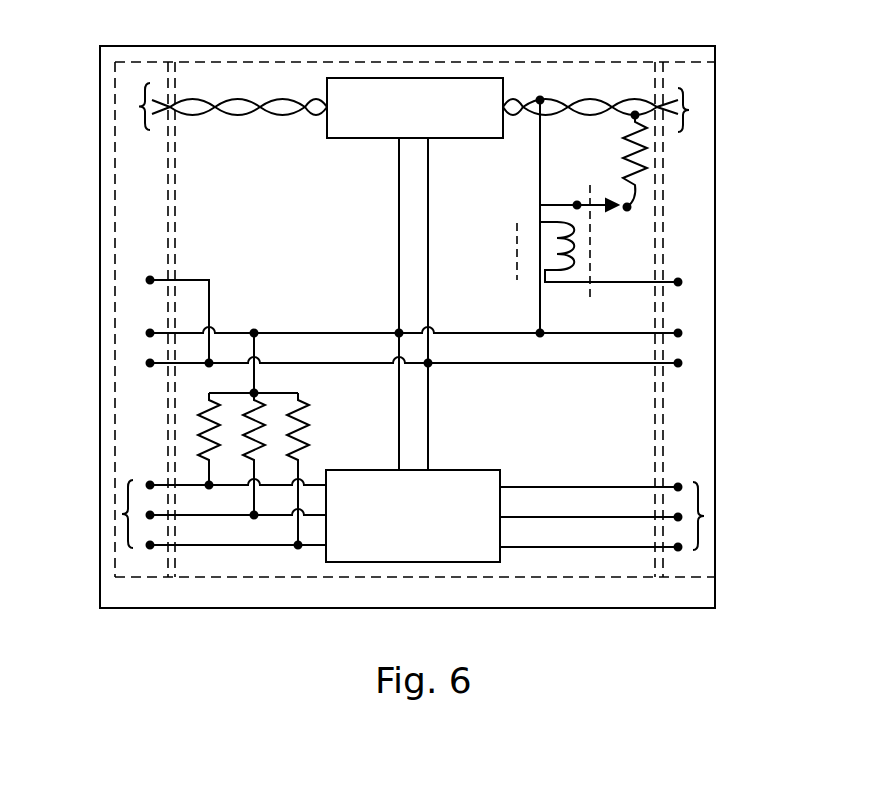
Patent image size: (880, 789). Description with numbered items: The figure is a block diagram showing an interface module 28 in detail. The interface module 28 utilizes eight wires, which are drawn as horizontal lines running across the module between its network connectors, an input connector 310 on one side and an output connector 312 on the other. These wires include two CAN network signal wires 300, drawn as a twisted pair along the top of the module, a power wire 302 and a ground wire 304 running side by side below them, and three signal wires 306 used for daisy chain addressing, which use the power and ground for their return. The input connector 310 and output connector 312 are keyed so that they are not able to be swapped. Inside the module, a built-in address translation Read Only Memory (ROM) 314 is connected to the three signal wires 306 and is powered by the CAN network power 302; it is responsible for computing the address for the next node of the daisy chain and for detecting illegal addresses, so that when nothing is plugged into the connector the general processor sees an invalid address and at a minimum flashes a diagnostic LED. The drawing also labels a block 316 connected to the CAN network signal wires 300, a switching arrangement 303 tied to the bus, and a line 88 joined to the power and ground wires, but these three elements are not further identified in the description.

The interface module 28 is at (668, 42).
The signal line 88 is at (150, 278).
The CAN network signal wires 300 is at (140, 102).
The power wire 302 is at (150, 331).
The termination relay switch 303 is at (678, 280).
The ground wire 304 is at (152, 366).
The signal wires 306 is at (125, 510).
The input connector 310 is at (142, 560).
The output connector 312 is at (683, 565).
The address translation Read Only Memory (ROM) 314 is at (463, 562).
The CAN transceiver 316 is at (470, 78).